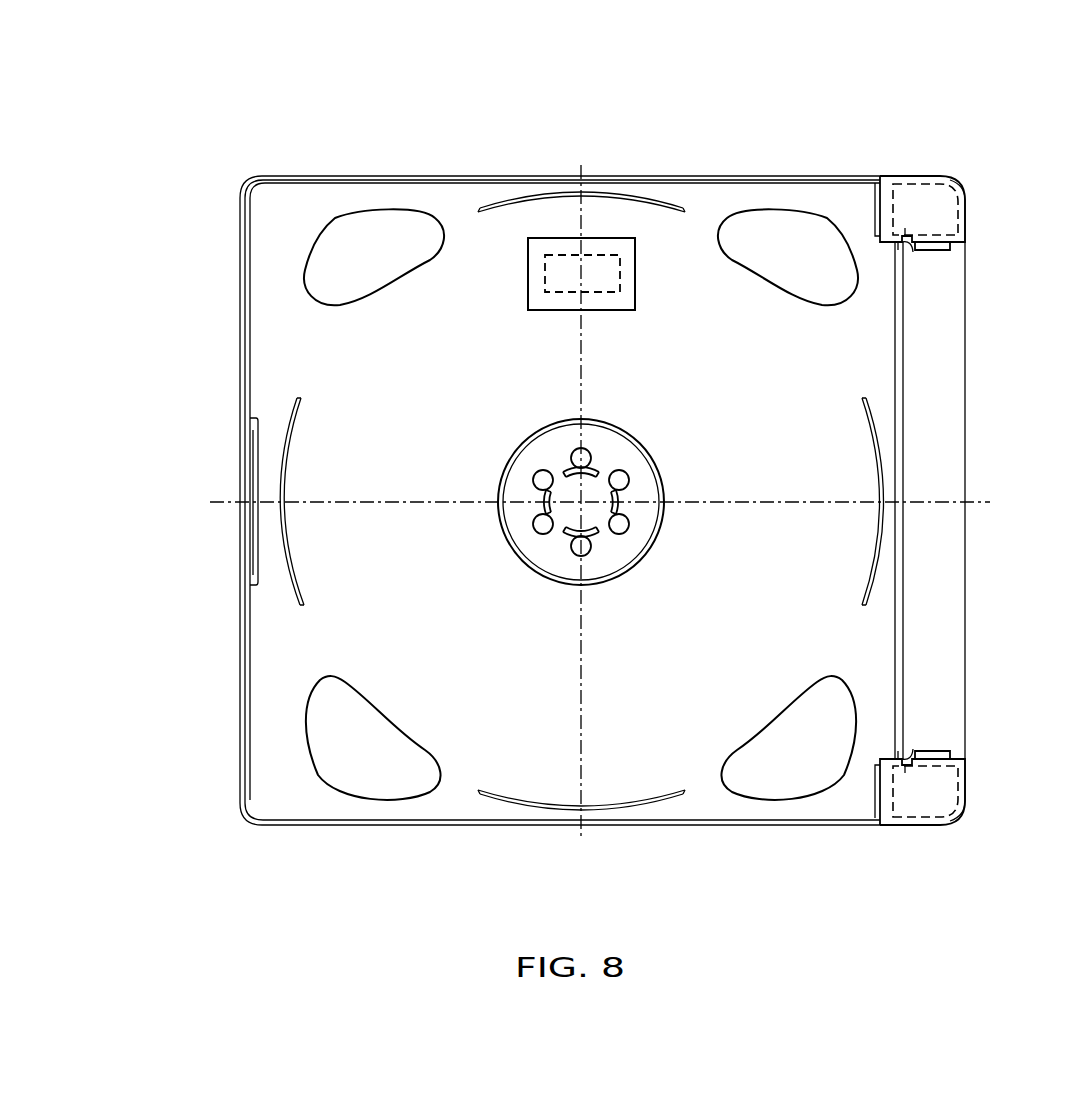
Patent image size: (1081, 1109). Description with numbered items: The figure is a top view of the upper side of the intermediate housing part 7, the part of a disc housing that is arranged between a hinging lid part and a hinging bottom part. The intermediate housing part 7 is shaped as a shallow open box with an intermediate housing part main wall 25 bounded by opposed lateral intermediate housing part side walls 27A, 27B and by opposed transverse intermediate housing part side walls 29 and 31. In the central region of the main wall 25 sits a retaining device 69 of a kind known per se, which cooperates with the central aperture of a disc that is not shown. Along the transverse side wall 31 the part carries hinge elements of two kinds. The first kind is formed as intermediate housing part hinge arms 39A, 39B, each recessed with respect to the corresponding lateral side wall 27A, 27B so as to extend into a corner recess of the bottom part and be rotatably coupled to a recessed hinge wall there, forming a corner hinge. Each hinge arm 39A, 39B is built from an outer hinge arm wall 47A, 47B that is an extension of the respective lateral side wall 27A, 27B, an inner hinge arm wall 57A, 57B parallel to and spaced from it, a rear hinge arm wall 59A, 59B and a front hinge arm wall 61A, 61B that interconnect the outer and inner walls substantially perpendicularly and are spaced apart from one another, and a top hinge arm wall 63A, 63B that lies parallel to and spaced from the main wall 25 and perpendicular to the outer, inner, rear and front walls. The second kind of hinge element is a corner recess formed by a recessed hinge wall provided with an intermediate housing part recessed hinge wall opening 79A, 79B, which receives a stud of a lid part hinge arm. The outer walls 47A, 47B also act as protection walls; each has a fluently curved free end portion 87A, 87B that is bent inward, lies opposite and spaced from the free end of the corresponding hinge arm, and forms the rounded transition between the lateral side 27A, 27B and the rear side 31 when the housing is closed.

The intermediate housing part 7 is at (232, 150).
The intermediate housing part main wall 25 is at (689, 200).
The intermediate housing part lateral side wall 27A is at (428, 830).
The intermediate housing part lateral side wall 27B is at (641, 178).
The intermediate housing part transverse side wall 29 is at (255, 642).
The intermediate housing part transverse side wall 31 is at (966, 405).
The intermediate housing part hinge arm 39A is at (885, 828).
The intermediate housing part hinge arm 39B is at (885, 178).
The outer intermediate housing part hinge arm wall 47A is at (898, 828).
The outer intermediate housing part hinge arm wall 47B is at (898, 178).
The inner intermediate housing part hinge arm wall 57A is at (905, 745).
The inner intermediate housing part hinge arm wall 57B is at (905, 255).
The rear intermediate housing part hinge arm wall 59A is at (993, 820).
The rear intermediate housing part hinge arm wall 59B is at (993, 190).
The front intermediate housing part hinge arm wall 61A is at (852, 820).
The front intermediate housing part hinge arm wall 61B is at (852, 190).
The top intermediate housing part hinge arm wall 63A is at (905, 770).
The top intermediate housing part hinge arm wall 63B is at (905, 233).
The retaining device 69 is at (636, 572).
The intermediate housing part recessed hinge wall opening 79A is at (932, 748).
The intermediate housing part recessed hinge wall opening 79B is at (932, 255).
The intermediate housing part hinge arm free end portion 87A is at (950, 828).
The intermediate housing part hinge arm free end portion 87B is at (950, 178).